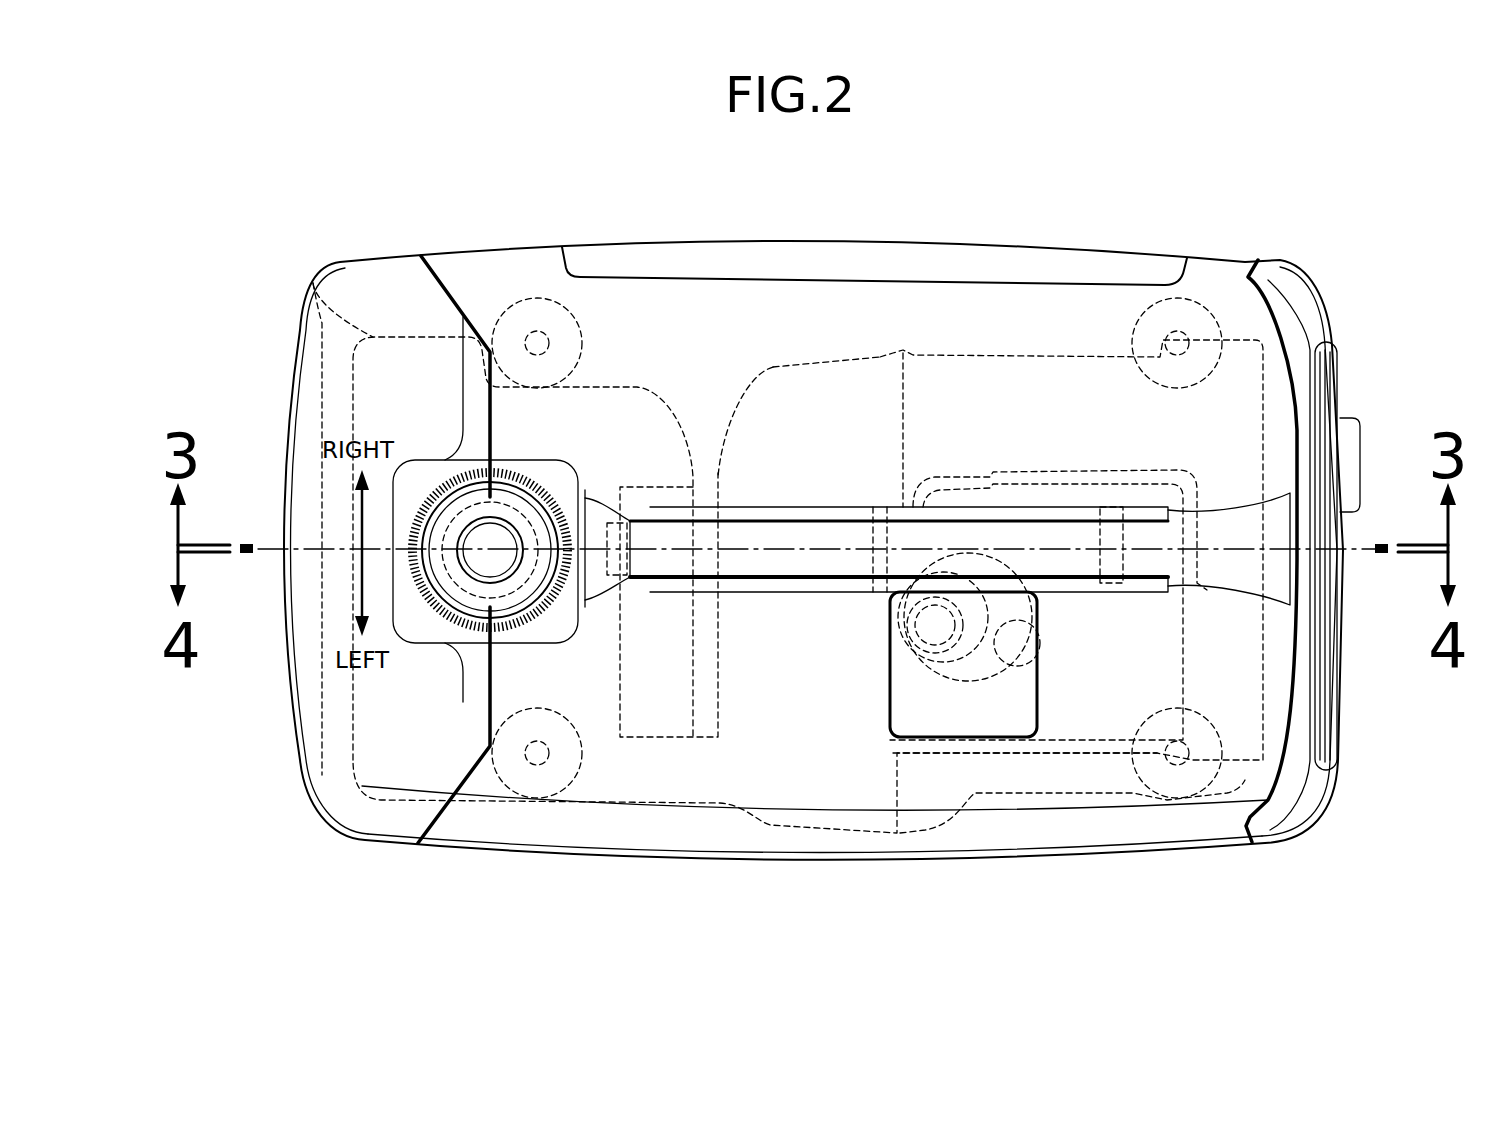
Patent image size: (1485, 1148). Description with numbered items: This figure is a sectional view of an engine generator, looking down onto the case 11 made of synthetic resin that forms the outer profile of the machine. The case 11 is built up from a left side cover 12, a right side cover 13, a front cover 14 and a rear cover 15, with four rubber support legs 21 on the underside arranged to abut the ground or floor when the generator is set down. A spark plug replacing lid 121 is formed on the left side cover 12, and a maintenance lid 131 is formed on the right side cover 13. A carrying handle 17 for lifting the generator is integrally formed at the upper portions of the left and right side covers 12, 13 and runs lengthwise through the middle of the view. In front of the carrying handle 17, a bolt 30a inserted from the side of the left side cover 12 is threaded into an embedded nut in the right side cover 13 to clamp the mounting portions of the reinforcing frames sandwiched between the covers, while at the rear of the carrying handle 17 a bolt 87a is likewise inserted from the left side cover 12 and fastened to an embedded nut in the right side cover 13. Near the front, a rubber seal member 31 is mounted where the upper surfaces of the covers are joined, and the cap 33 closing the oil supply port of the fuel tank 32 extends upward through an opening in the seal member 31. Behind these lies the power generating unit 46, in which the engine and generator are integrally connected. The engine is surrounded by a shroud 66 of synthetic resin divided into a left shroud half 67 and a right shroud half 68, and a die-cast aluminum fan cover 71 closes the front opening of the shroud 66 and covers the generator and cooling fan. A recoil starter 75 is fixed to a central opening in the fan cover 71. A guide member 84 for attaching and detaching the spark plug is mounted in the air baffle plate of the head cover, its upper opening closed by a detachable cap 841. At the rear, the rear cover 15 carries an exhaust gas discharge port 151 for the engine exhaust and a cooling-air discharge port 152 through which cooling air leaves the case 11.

The case 11 is at (482, 225).
The left side cover 12 is at (1072, 855).
The right side cover 13 is at (1218, 253).
The maintenance lid 131 is at (872, 255).
The front cover 14 is at (285, 722).
The rear cover 15 is at (1320, 280).
The exhaust gas discharge port 151 is at (1363, 453).
The cooling-air discharge port 152 is at (1337, 373).
The carrying handle 17 is at (840, 507).
The support legs 21 is at (580, 331).
The bolt 30a is at (700, 500).
The seal member 31 is at (438, 487).
The fuel tank 32 is at (313, 285).
The cap 33 is at (510, 510).
The power generating unit 46 is at (815, 357).
The shroud 66 is at (970, 357).
The left shroud half 67 is at (1005, 793).
The right shroud half 68 is at (1087, 355).
The fan cover 71 is at (752, 410).
The recoil starter 75 is at (608, 668).
The guide member 84 is at (920, 663).
The cap 841 is at (880, 622).
The bolt 87a is at (1113, 507).
The spark plug replacing lid 121 is at (1017, 704).